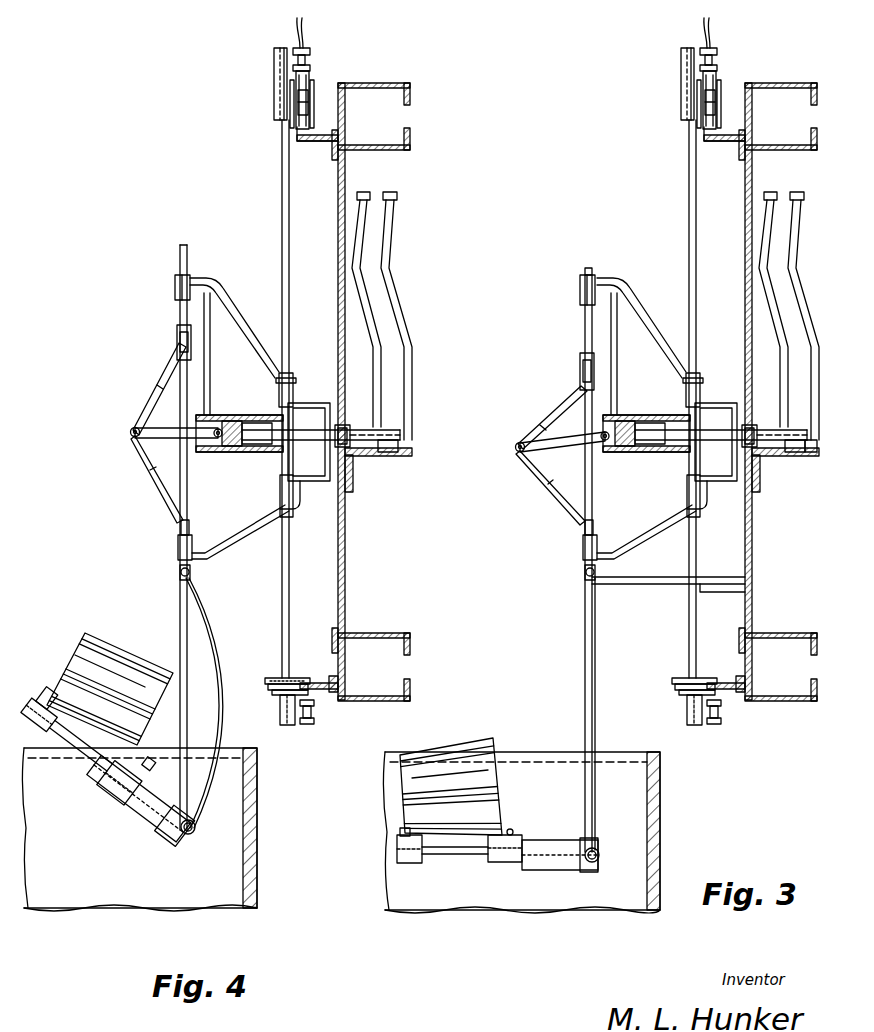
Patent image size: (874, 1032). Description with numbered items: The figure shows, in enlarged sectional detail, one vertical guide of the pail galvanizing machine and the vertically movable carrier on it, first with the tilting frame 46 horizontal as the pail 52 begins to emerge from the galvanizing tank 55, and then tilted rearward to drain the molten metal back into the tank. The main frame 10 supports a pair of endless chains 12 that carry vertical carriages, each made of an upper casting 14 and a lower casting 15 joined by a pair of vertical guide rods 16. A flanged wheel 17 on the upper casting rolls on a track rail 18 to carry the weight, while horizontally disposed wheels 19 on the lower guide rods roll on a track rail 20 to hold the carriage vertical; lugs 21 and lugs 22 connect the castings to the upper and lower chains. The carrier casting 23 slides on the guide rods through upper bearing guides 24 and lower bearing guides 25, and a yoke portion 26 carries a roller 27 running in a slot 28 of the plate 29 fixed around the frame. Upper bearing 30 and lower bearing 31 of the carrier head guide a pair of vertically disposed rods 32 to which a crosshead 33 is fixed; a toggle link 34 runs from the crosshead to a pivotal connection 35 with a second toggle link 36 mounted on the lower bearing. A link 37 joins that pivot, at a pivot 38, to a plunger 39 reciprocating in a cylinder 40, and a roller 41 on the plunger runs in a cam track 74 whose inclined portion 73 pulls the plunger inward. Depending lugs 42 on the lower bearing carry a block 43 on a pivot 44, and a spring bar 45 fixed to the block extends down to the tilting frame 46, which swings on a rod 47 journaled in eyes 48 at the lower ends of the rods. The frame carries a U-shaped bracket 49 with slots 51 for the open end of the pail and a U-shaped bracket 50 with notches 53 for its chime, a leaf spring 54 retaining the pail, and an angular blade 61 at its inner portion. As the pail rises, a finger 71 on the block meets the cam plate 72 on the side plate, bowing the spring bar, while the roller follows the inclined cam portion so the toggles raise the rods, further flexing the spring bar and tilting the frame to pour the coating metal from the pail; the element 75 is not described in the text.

In FIG. 4, the frame 10 is at (359, 83).
In FIG. 3, the frame 10 is at (778, 398).
In FIG. 4, the endless chains 12 is at (309, 62).
In FIG. 3, the endless chains 12 is at (725, 384).
In FIG. 4, the upper casting 14 is at (274, 88).
In FIG. 3, the upper casting 14 is at (666, 84).
In FIG. 4, the lower casting 15 is at (280, 720).
In FIG. 3, the lower casting 15 is at (674, 710).
In FIG. 4, the vertical guide rods 16 is at (282, 205).
In FIG. 3, the vertical guide rods 16 is at (667, 399).
In FIG. 4, the flanged wheel 17 is at (310, 96).
In FIG. 3, the flanged wheel 17 is at (728, 83).
In FIG. 4, the track rail 18 is at (314, 135).
In FIG. 3, the track rail 18 is at (741, 125).
In FIG. 4, the horizontally disposed wheels 19 is at (272, 680).
In FIG. 3, the horizontally disposed wheels 19 is at (673, 679).
In FIG. 4, the track rail 20 is at (316, 682).
In FIG. 3, the track rail 20 is at (726, 670).
In FIG. 4, the lugs 21 is at (301, 26).
In FIG. 3, the lugs 21 is at (713, 27).
In FIG. 4, the lugs 22 is at (295, 737).
In FIG. 3, the lugs 22 is at (732, 731).
In FIG. 4, the carrier casting 23 is at (224, 314).
In FIG. 3, the carrier casting 23 is at (641, 320).
In FIG. 4, the upper bearing guides 24 is at (279, 392).
In FIG. 3, the upper bearing guides 24 is at (674, 390).
In FIG. 4, the lower bearing guides 25 is at (293, 505).
In FIG. 3, the lower bearing guides 25 is at (672, 494).
In FIG. 4, the yoke portion 26 is at (325, 498).
In FIG. 3, the yoke portion 26 is at (710, 501).
In FIG. 4, the roller 27 is at (343, 428).
In FIG. 3, the roller 27 is at (759, 417).
In FIG. 4, the slot 28 is at (320, 441).
In FIG. 3, the slot 28 is at (716, 442).
In FIG. 4, the plate 29 is at (345, 555).
In FIG. 3, the plate 29 is at (768, 525).
In FIG. 4, the upper bearing 30 is at (175, 287).
In FIG. 3, the upper bearing 30 is at (580, 291).
In FIG. 4, the lower bearing 31 is at (178, 549).
In FIG. 3, the lower bearing 31 is at (583, 548).
In FIG. 4, the vertically disposed rods 32 is at (180, 612).
In FIG. 3, the vertically disposed rods 32 is at (585, 640).
In FIG. 4, the crosshead 33 is at (177, 342).
In FIG. 3, the crosshead 33 is at (580, 367).
In FIG. 4, the toggle link 34 is at (159, 391).
In FIG. 3, the toggle link 34 is at (552, 403).
In FIG. 4, the pivotal connection 35 is at (129, 436).
In FIG. 3, the pivotal connection 35 is at (518, 444).
In FIG. 4, the toggle link 36 is at (170, 504).
In FIG. 3, the toggle link 36 is at (562, 487).
In FIG. 4, the link 37 is at (156, 444).
In FIG. 3, the link 37 is at (558, 448).
In FIG. 4, the pivot 38 is at (218, 429).
In FIG. 3, the pivot 38 is at (621, 366).
In FIG. 4, the plunger 39 is at (246, 443).
In FIG. 3, the plunger 39 is at (646, 445).
In FIG. 4, the cylinder 40 is at (261, 449).
In FIG. 3, the cylinder 40 is at (721, 451).
In FIG. 4, the roller 41 is at (387, 452).
In FIG. 3, the roller 41 is at (785, 468).
In FIG. 4, the depending lugs 42 is at (180, 577).
In FIG. 3, the depending lugs 42 is at (586, 566).
In FIG. 4, the block 43 is at (191, 574).
In FIG. 3, the block 43 is at (584, 577).
In FIG. 4, the pivot 44 is at (178, 570).
In FIG. 3, the pivot 44 is at (595, 569).
In FIG. 4, the spring bar 45 is at (228, 620).
In FIG. 3, the spring bar 45 is at (595, 632).
In FIG. 4, the tilting frame 46 is at (184, 834).
In FIG. 3, the tilting frame 46 is at (604, 868).
In FIG. 4, the rod 47 is at (193, 825).
In FIG. 3, the rod 47 is at (599, 850).
In FIG. 4, the eyes 48 is at (193, 834).
In FIG. 3, the eyes 48 is at (599, 857).
In FIG. 4, the U-shaped bracket 49 is at (104, 778).
In FIG. 3, the U-shaped bracket 49 is at (505, 860).
In FIG. 4, the U-shaped bracket 50 is at (44, 752).
In FIG. 3, the U-shaped bracket 50 is at (408, 862).
In FIG. 4, the slots 51 is at (143, 768).
In FIG. 3, the slots 51 is at (512, 830).
In FIG. 4, the pail 52 is at (140, 719).
In FIG. 3, the pail 52 is at (490, 775).
In FIG. 4, the slots or notches 53 is at (48, 688).
In FIG. 3, the slots or notches 53 is at (400, 832).
In FIG. 4, the leaf spring 54 is at (84, 759).
In FIG. 3, the leaf spring 54 is at (467, 854).
In FIG. 4, the galvanizing tank 55 is at (254, 830).
In FIG. 3, the galvanizing tank 55 is at (662, 812).
In FIG. 4, the angular blade 61 is at (160, 817).
In FIG. 3, the angular blade 61 is at (560, 870).
In FIG. 4, the finger 71 is at (238, 551).
In FIG. 3, the finger 71 is at (646, 586).
In FIG. 3, the cam plate 72 is at (726, 577).
In FIG. 3, the inclined portion 73 is at (804, 468).
In FIG. 4, the cam track 74 is at (387, 345).
In FIG. 3, the cam track 74 is at (766, 316).
In FIG. 4, the bent arm 75 is at (401, 390).
In FIG. 3, the bent arm 75 is at (795, 387).